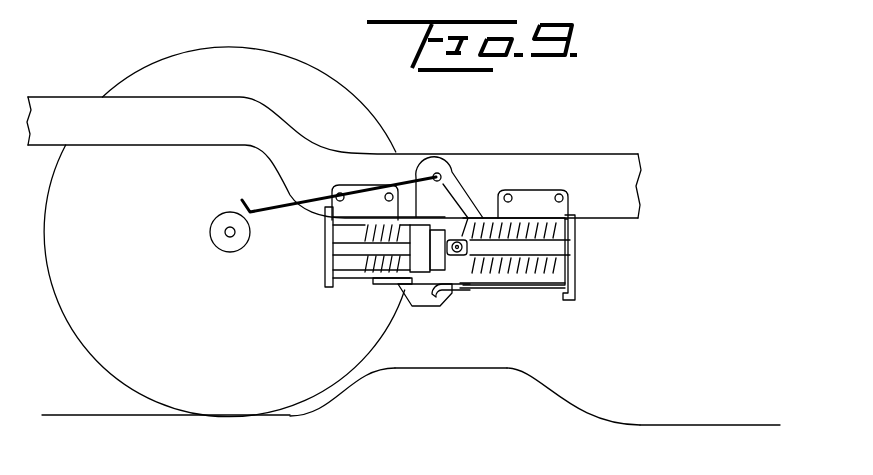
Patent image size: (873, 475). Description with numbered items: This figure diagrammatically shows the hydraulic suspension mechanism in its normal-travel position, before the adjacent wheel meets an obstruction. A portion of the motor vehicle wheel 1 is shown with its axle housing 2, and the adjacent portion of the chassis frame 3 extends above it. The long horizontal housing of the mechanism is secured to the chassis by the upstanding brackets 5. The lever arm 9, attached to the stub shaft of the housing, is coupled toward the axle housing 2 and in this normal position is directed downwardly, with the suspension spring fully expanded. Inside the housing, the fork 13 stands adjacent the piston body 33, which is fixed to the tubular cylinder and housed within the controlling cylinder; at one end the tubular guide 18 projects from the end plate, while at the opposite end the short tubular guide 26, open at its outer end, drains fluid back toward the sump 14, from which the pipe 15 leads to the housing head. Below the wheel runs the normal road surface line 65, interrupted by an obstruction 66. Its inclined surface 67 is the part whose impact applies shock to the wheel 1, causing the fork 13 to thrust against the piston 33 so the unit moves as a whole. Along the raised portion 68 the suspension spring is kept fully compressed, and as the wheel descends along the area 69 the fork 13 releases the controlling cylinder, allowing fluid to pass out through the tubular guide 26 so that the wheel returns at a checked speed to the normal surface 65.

The motor vehicle wheel 1 is at (170, 408).
The axle housing 2 is at (226, 246).
The chassis frame 3 is at (610, 165).
The upstanding brackets 5 is at (564, 206).
The lever arm 9 is at (313, 197).
The fork 13 is at (458, 205).
The sump 14 is at (440, 300).
The pipe 15 is at (523, 292).
The tubular guide 18 is at (571, 233).
The short tubular guide 26 is at (345, 246).
The piston body 33 is at (420, 258).
The normal road surface line 65 is at (120, 420).
The obstruction 66 is at (465, 408).
The inclined surface 67 is at (340, 393).
The raised portion of road surface 68 is at (445, 370).
The descending area 69 is at (605, 370).